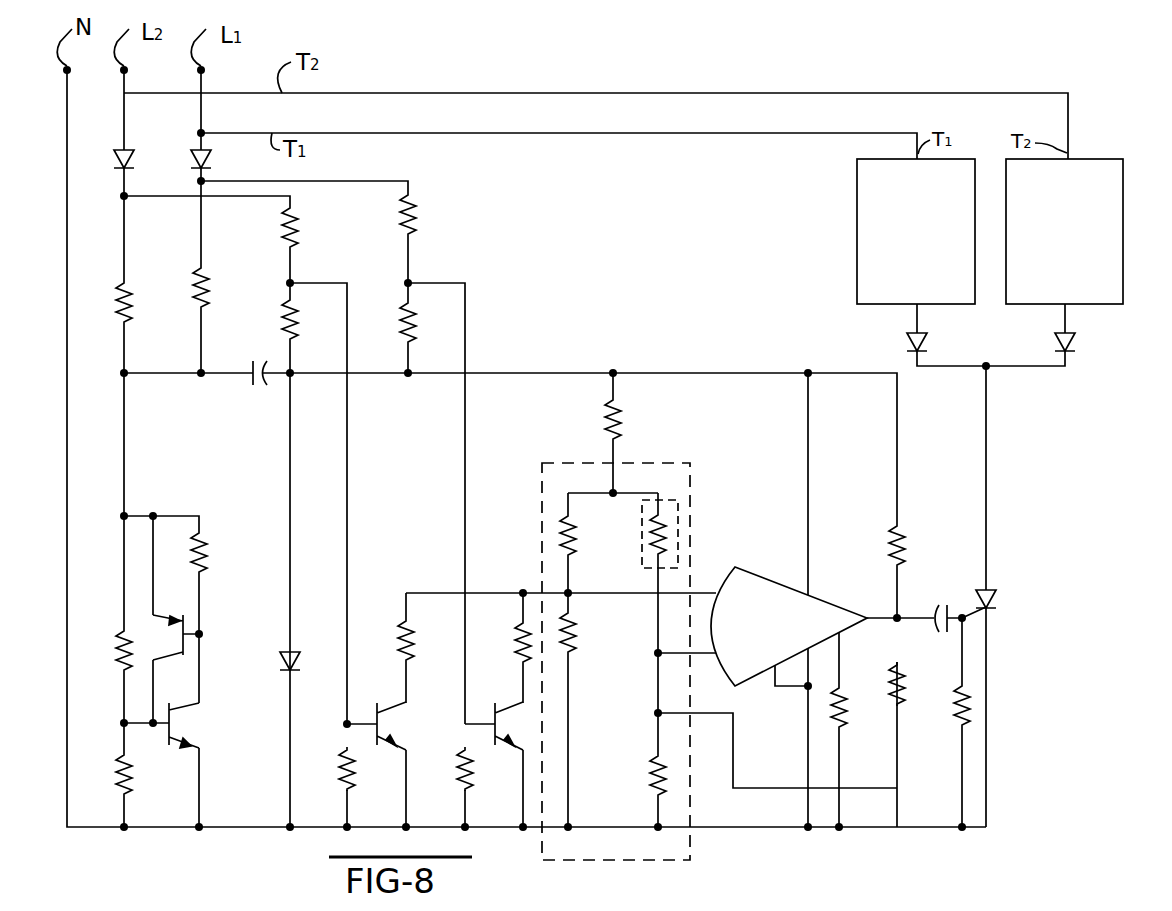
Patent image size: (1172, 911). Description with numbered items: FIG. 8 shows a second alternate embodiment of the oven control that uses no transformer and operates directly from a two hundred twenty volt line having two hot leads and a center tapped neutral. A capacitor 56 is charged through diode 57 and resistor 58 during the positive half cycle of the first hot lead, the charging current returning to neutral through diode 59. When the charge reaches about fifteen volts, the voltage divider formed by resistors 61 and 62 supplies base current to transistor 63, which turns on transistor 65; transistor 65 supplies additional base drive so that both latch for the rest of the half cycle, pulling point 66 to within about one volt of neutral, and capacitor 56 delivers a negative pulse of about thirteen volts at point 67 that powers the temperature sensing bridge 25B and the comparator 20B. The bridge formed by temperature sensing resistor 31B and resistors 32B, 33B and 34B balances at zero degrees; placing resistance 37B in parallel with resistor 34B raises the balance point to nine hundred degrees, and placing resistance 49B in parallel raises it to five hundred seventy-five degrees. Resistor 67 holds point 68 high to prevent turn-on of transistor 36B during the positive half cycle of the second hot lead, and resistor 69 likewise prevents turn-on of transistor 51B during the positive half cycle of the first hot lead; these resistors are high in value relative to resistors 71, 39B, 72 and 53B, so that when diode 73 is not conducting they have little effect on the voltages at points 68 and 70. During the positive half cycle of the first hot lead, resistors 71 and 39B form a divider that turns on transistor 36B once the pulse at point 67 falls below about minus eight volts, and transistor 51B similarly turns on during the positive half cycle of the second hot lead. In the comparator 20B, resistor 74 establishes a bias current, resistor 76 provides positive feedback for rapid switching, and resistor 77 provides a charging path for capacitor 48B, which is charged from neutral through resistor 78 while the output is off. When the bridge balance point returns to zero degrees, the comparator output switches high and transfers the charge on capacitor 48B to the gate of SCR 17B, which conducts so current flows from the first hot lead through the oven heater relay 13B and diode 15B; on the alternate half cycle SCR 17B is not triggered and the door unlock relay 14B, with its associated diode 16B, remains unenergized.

The oven heater relay 13B is at (857, 202).
The door unlock relay 14B is at (1084, 158).
The diode 15B is at (926, 342).
The diode 16B is at (1076, 342).
The output SCR 17B is at (1000, 590).
The comparator 20B is at (811, 570).
The temperature sensing bridge 25B is at (660, 463).
The temperature sensing resistor 31B is at (663, 522).
The resistor 32B is at (660, 790).
The resistor 33B is at (564, 521).
The resistor 34B is at (572, 648).
The transistor 36B is at (387, 722).
The resistance 37B is at (404, 620).
The resistor 39B is at (344, 752).
The capacitor 48B is at (968, 560).
The resistance 49B is at (519, 651).
The transistor 51B is at (514, 721).
The resistor 53B is at (461, 762).
The capacitor 56 is at (254, 386).
The diode 57 is at (209, 159).
The resistor 58 is at (205, 274).
The diode 59 is at (284, 654).
The resistor 61 is at (117, 636).
The resistor 62 is at (119, 766).
The transistor 63 is at (172, 720).
The transistor 65 is at (186, 614).
The point 66 is at (200, 376).
The resistor; point 67 is at (292, 378).
The point 68 is at (293, 280).
The resistor 69 is at (412, 202).
The point 70 is at (411, 280).
The resistor 71 is at (293, 310).
The resistor 72 is at (412, 341).
The diode 73 is at (129, 153).
The resistor 74 is at (844, 720).
The resistor 76 is at (903, 674).
The resistor 77 is at (901, 525).
The resistor 78 is at (970, 712).